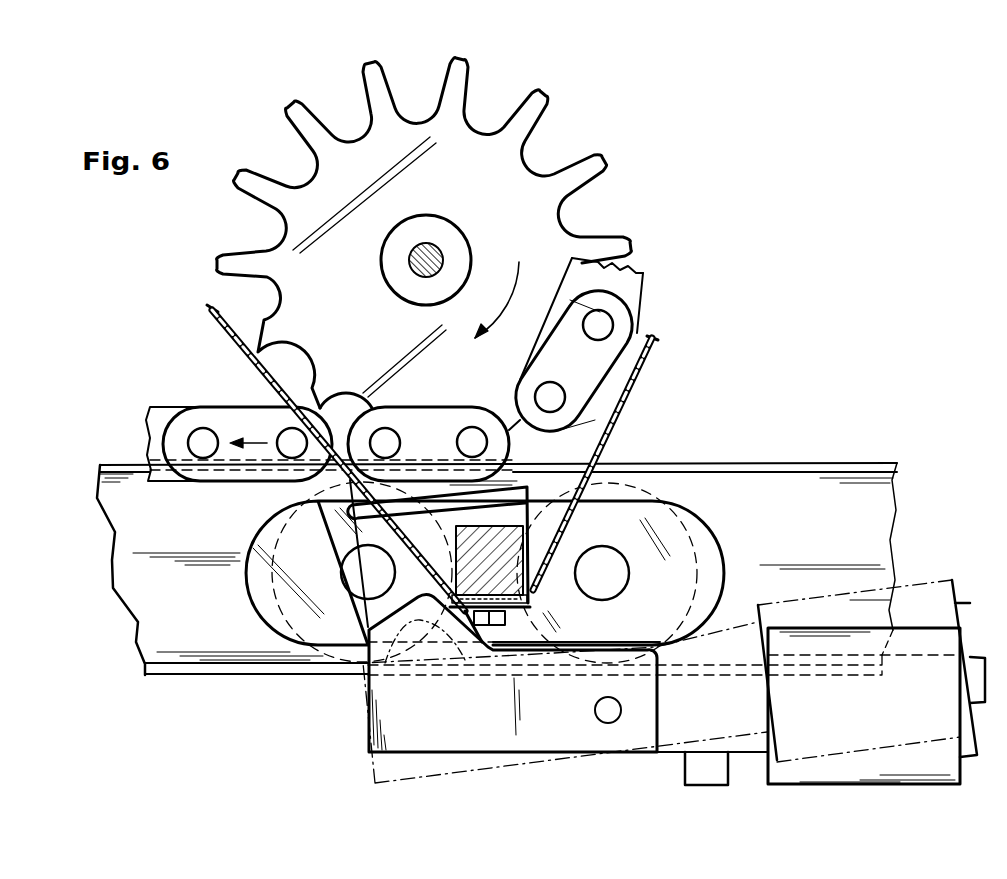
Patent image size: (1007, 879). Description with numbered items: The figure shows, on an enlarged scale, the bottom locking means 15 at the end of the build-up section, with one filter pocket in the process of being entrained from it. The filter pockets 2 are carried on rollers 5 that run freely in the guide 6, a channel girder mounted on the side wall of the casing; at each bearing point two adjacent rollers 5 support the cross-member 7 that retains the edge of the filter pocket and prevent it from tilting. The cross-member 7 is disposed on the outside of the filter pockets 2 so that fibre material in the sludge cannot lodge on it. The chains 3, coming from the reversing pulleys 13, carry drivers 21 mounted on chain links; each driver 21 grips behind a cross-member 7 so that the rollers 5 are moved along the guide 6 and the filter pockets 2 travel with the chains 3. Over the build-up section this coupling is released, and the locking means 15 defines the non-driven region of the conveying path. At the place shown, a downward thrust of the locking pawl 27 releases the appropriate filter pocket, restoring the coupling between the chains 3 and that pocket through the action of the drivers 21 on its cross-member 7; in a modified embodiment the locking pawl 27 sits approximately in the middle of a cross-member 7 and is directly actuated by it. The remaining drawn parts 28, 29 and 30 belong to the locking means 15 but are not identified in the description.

The reversing pulleys 13 is at (440, 199).
The filter pockets 2 is at (257, 368).
The chains 3 is at (643, 275).
The guide 6 is at (788, 482).
The rollers 5 is at (672, 504).
The drivers 21 is at (533, 483).
The cross-member 7 is at (510, 577).
The bottom locking means 15 is at (728, 627).
The nut 30 is at (465, 634).
The pin 29 is at (600, 712).
The locking pawl 27 is at (747, 742).
The box 28 is at (922, 643).